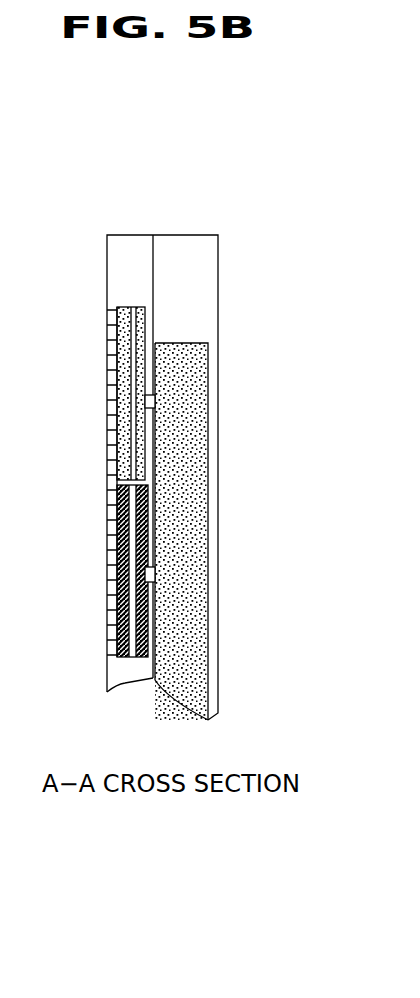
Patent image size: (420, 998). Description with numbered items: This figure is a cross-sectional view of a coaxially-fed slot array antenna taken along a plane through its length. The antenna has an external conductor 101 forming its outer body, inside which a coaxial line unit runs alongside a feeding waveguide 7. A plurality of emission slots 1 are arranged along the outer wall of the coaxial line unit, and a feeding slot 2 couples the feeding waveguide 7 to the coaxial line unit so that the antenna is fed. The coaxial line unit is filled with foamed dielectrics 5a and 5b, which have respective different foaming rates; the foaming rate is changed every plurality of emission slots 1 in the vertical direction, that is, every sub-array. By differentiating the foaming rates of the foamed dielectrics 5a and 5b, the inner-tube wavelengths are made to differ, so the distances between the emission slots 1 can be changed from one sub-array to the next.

The external conductor 101 is at (197, 258).
The feeding waveguide 7 is at (194, 490).
The foamed dielectric 5a is at (145, 307).
The foamed dielectric 5b is at (117, 541).
The emission slot 1 is at (108, 381).
The feeding slot 2 is at (150, 400).